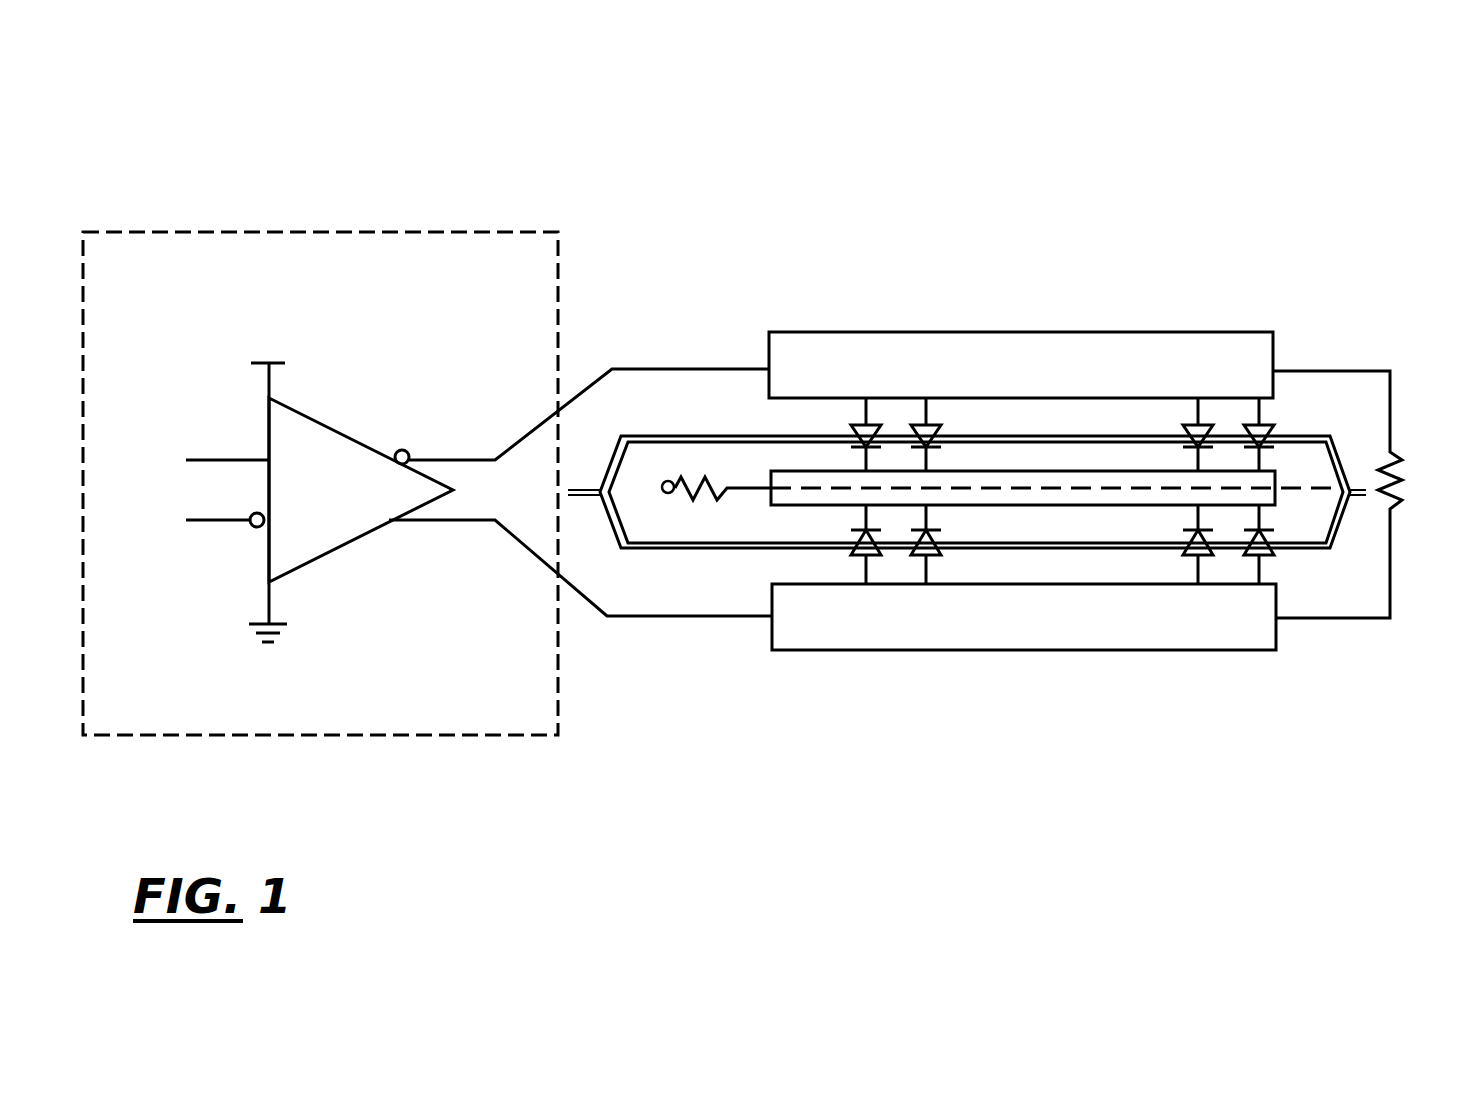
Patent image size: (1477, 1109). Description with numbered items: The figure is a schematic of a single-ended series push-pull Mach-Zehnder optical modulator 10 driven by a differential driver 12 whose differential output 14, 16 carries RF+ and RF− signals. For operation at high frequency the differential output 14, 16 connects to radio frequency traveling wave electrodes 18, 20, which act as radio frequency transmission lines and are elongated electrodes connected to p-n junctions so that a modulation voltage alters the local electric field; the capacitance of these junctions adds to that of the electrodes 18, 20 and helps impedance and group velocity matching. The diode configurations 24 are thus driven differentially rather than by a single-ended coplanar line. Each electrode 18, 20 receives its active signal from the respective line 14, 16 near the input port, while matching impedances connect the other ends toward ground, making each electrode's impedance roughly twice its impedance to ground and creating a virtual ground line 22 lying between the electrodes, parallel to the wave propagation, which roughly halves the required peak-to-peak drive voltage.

The single-ended series push-pull optical modulator 10 is at (903, 112).
The differential driver 12 is at (343, 232).
The differential output line 14 is at (616, 366).
The differential output line 16 is at (690, 616).
The traveling wave electrode 18 is at (1055, 331).
The traveling wave electrode 20 is at (1113, 650).
The virtual ground line 22 is at (1314, 487).
The diode configurations 24 is at (1292, 411).